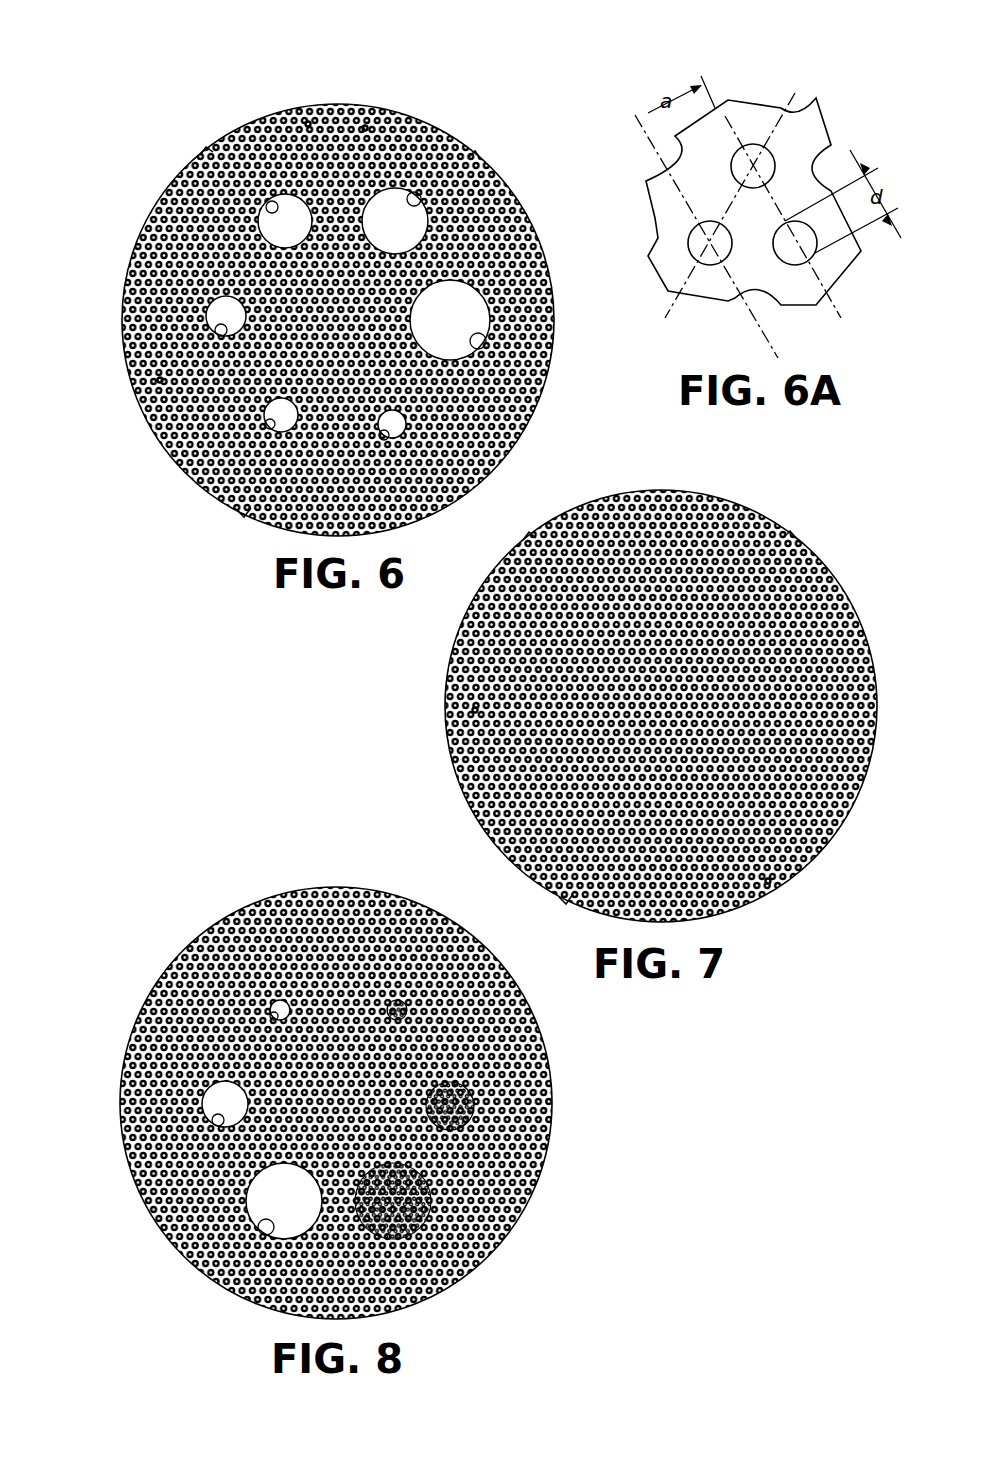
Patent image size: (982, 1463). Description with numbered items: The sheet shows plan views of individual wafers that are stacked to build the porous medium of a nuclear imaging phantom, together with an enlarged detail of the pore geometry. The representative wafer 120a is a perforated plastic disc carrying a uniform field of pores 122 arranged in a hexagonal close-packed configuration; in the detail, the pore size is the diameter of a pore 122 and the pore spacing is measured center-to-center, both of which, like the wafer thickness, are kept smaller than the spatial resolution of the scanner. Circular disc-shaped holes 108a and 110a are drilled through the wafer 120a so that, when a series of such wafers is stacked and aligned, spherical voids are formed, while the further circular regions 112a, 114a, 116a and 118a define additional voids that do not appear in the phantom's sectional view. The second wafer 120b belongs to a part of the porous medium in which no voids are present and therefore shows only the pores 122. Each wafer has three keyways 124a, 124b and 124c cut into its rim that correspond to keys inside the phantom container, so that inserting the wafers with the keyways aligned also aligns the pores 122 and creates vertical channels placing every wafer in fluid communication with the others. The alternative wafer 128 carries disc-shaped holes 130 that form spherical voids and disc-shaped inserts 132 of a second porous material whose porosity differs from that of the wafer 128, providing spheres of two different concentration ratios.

In FIG. 6, the wafer 120a is at (130, 222).
In FIG. 6A, the wafer 120a is at (738, 90).
In FIG. 7, the wafer 120b is at (743, 504).
In FIG. 6, the pores 122 is at (299, 113).
In FIG. 6A, the pores 122 is at (764, 146).
In FIG. 7, the pores 122 is at (464, 703).
In FIG. 6, the disc-shaped hole 108a is at (219, 328).
In FIG. 6, the disc-shaped hole 110a is at (473, 332).
In FIG. 6, the void region 112a is at (411, 193).
In FIG. 6, the void region 114a is at (262, 196).
In FIG. 6, the void region 116a is at (260, 418).
In FIG. 6, the void region 118a is at (394, 428).
In FIG. 6, the keyway 124a is at (199, 142).
In FIG. 7, the keyway 124a is at (519, 527).
In FIG. 6, the keyway 124b is at (466, 146).
In FIG. 7, the keyway 124b is at (784, 526).
In FIG. 6, the keyway 124c is at (237, 505).
In FIG. 7, the keyway 124c is at (557, 891).
In FIG. 8, the wafer 128 is at (155, 918).
In FIG. 8, the disc-shaped holes 130 is at (263, 1000).
In FIG. 8, the disc-shaped inserts 132 is at (399, 1000).